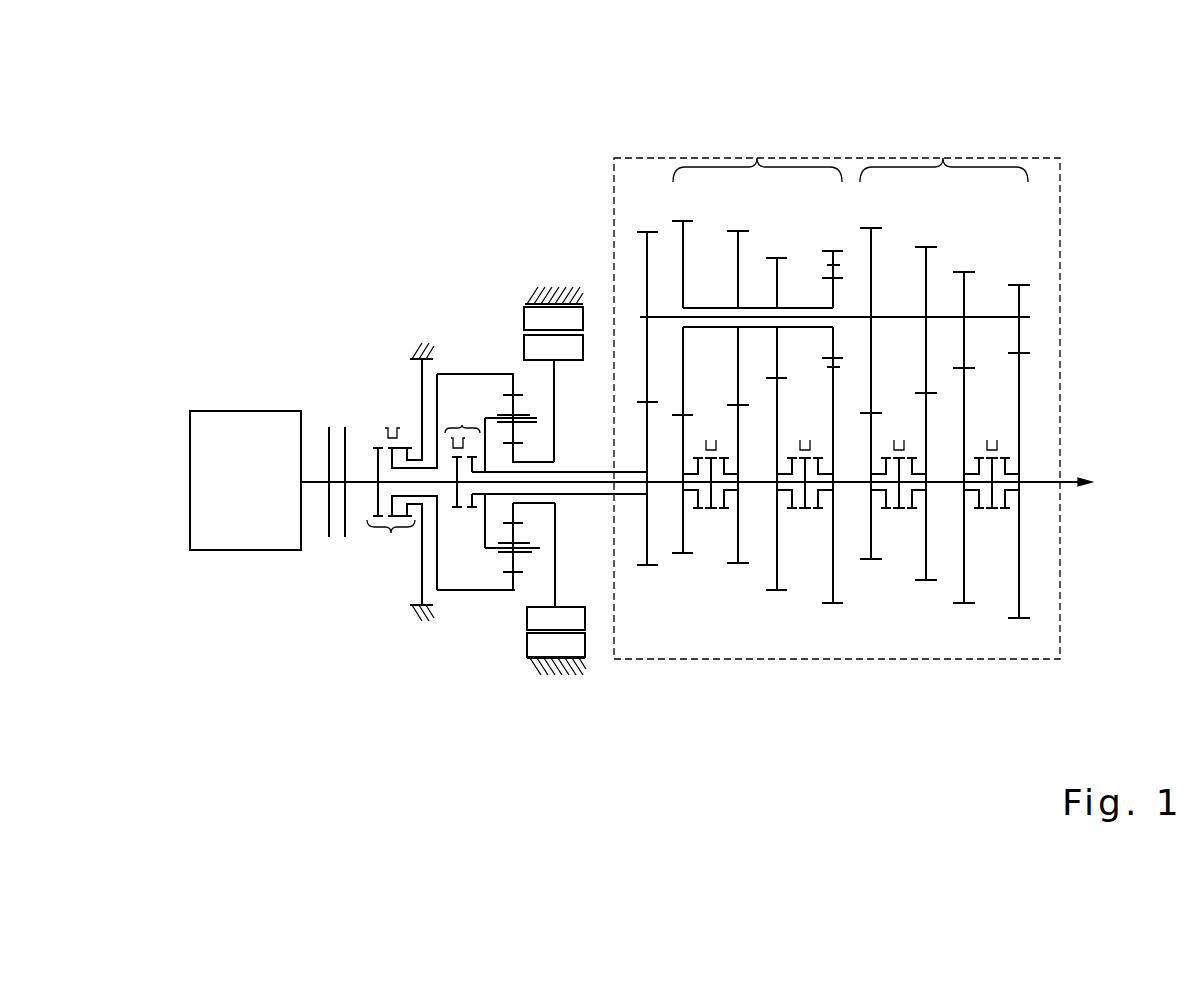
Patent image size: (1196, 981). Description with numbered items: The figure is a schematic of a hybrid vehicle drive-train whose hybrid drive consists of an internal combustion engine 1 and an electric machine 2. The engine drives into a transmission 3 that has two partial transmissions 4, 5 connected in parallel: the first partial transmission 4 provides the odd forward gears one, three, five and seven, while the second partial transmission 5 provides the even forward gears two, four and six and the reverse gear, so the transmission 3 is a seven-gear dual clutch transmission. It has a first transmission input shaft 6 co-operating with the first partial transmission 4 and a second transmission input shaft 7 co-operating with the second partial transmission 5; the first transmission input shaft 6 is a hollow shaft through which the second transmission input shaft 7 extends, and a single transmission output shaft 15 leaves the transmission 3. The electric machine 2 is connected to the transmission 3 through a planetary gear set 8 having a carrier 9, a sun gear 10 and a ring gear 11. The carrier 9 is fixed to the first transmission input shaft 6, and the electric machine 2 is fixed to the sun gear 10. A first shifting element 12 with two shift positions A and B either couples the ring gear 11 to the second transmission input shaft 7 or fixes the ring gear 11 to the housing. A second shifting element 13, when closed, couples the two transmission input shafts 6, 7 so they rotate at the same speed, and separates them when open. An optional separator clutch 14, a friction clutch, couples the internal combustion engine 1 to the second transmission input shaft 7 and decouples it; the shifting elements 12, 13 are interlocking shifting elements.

The internal combustion engine 1 is at (259, 435).
The electric machine 2 is at (558, 278).
The transmission 3 is at (1070, 172).
The first partial transmission 4 is at (943, 158).
The second partial transmission 5 is at (757, 158).
The first transmission input shaft 6 is at (600, 472).
The second transmission input shaft 7 is at (603, 494).
The planetary gear set 8 is at (503, 362).
The carrier 9 is at (485, 527).
The sun gear 10 is at (515, 508).
The ring gear 11 is at (483, 590).
The first shifting element 12 is at (391, 535).
The second shifting element 13 is at (462, 425).
The separator clutch 14 is at (337, 425).
The transmission output shaft 15 is at (1069, 482).